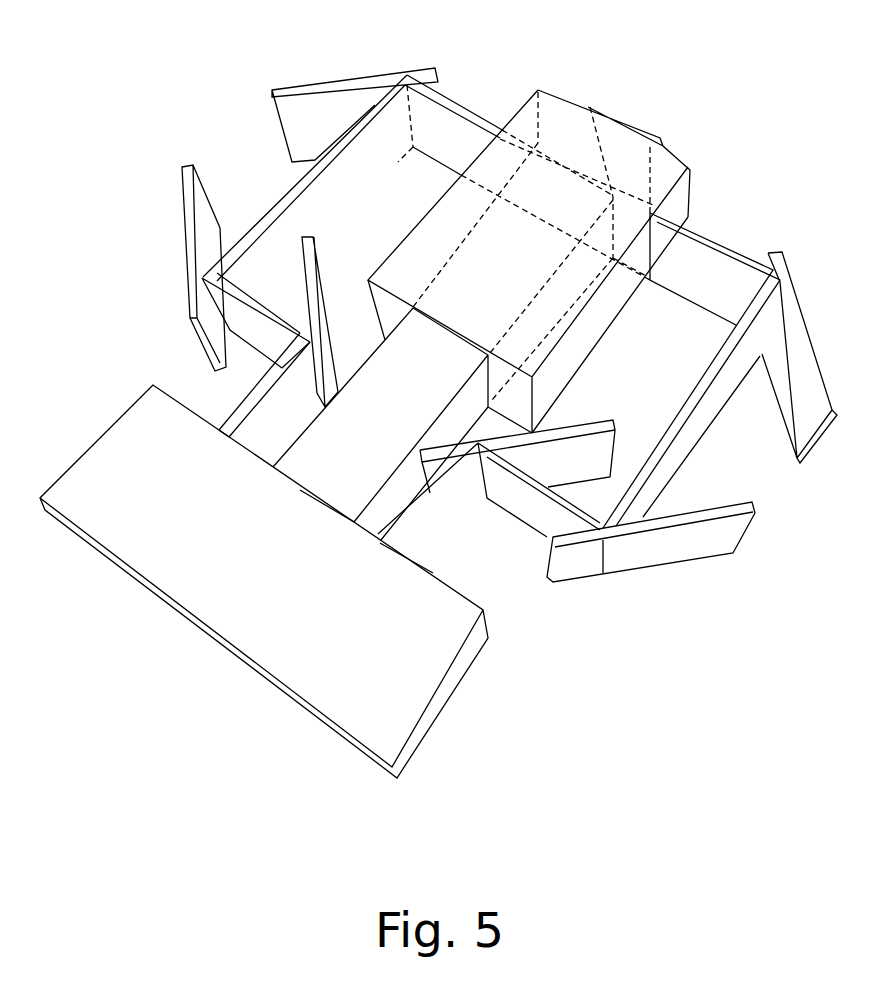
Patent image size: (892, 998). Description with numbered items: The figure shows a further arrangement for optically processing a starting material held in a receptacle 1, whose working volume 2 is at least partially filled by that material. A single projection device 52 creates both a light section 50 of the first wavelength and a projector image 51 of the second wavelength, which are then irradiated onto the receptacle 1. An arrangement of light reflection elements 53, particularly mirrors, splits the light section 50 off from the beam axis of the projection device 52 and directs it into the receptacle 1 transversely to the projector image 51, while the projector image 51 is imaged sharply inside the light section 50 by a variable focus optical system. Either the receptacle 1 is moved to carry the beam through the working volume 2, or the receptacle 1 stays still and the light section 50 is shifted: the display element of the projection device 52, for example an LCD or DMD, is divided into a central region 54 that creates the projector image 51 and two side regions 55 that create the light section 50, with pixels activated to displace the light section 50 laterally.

The receptacle 1 is at (524, 118).
The projector image 51 is at (587, 167).
The working volume 2 is at (670, 183).
The light section 50 is at (697, 233).
The projection device 52 is at (282, 657).
The light reflection elements 53 is at (680, 543).
The central region 54 is at (312, 492).
The regions 55 is at (397, 553).